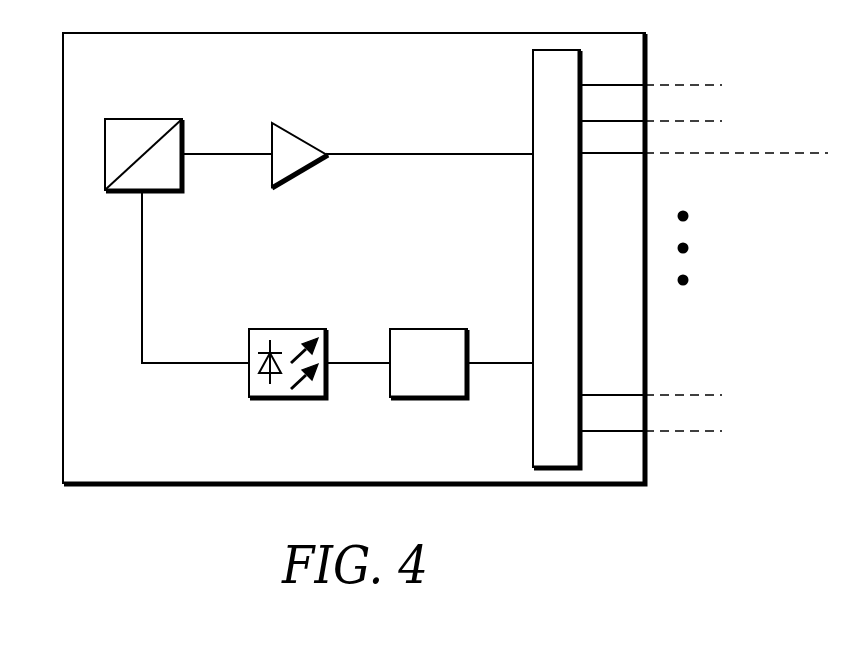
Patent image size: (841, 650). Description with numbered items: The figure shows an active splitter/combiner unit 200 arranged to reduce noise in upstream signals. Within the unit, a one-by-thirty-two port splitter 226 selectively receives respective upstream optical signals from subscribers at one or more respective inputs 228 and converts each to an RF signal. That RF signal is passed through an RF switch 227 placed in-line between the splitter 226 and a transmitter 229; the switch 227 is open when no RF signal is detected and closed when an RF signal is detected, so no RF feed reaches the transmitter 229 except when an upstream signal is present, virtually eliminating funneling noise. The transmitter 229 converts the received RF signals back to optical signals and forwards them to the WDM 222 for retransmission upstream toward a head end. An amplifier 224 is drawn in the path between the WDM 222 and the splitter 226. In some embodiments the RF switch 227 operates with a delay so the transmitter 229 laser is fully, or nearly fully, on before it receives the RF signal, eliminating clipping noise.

The active splitter/combiner unit 200 is at (590, 33).
The WDM 222 is at (170, 118).
The optical amplifier 224 is at (297, 133).
The 1×32 port splitter 226 is at (533, 248).
The RF switch 227 is at (427, 328).
The inputs 228 is at (755, 153).
The transmitter 229 is at (288, 328).